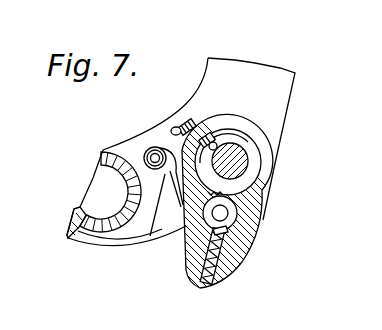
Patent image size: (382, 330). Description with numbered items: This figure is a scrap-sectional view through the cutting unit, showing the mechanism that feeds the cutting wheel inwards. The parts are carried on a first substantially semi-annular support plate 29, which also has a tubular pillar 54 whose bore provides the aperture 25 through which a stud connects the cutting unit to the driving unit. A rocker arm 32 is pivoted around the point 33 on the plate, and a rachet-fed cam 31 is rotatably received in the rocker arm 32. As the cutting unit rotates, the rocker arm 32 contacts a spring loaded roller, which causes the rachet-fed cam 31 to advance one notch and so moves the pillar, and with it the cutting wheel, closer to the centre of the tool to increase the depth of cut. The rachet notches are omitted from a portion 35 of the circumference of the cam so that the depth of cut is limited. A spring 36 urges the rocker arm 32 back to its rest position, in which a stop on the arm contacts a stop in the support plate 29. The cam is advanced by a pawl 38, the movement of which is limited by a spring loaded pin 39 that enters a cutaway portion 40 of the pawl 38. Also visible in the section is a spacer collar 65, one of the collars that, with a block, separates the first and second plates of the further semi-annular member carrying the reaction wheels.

The aperture 25 is at (98, 190).
The first substantially semi-annular support plate 29 is at (223, 73).
The rachet-fed cam 31 is at (158, 143).
The rocker arm 32 is at (192, 256).
The pivot point 33 is at (223, 127).
The portion of the circumference of the rachet-fed cam 35 is at (270, 203).
The spring 36 is at (157, 231).
The pawl 38 is at (233, 218).
The spring loaded pin 39 is at (226, 242).
The cutaway portion 40 is at (236, 240).
The tubular pillar 54 is at (83, 202).
The spacer collar 65 is at (70, 236).